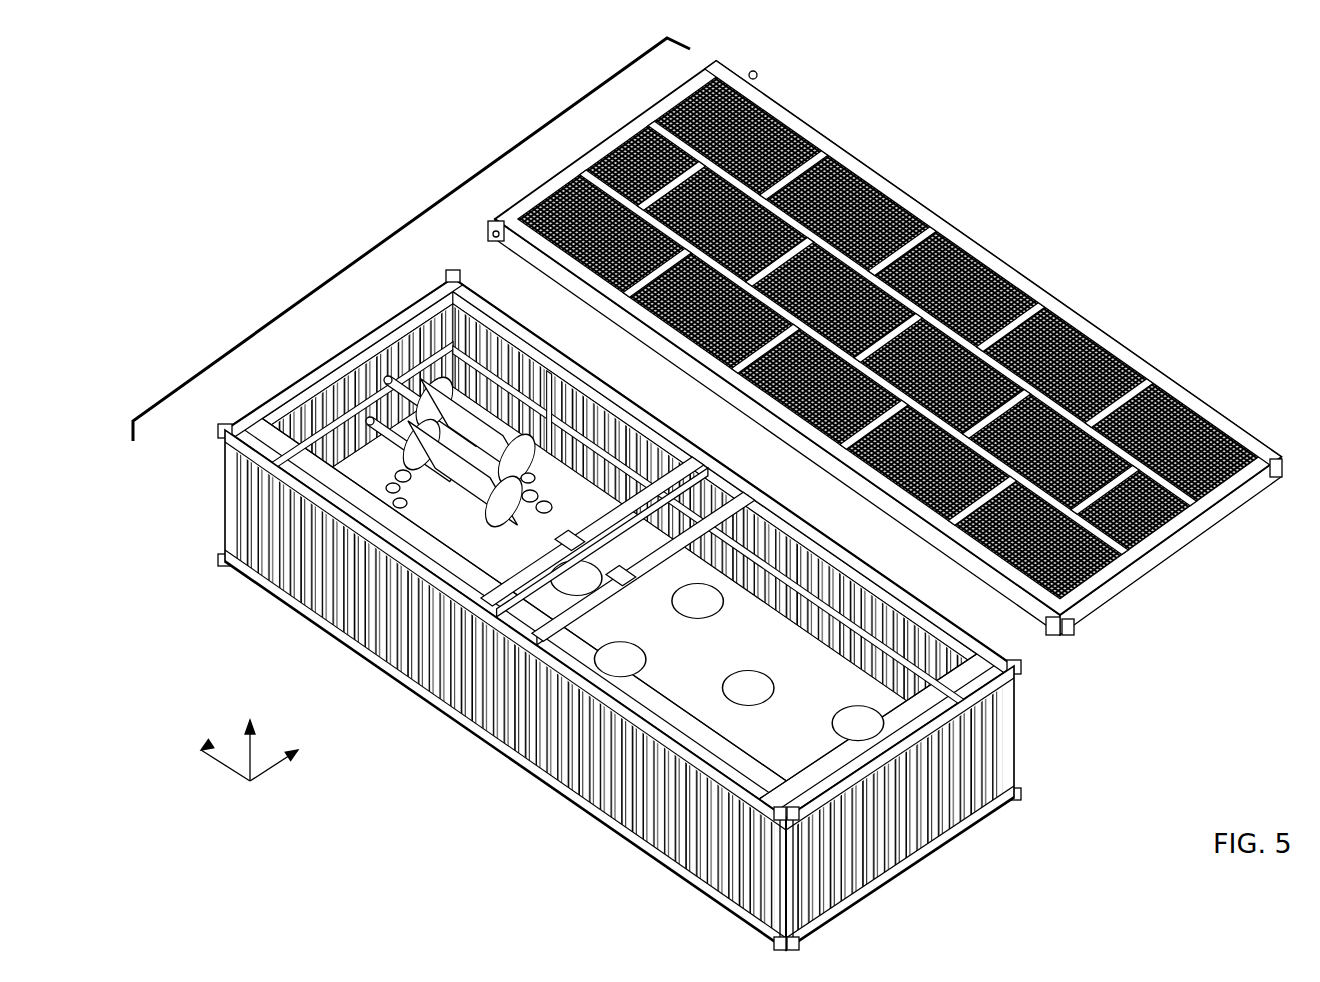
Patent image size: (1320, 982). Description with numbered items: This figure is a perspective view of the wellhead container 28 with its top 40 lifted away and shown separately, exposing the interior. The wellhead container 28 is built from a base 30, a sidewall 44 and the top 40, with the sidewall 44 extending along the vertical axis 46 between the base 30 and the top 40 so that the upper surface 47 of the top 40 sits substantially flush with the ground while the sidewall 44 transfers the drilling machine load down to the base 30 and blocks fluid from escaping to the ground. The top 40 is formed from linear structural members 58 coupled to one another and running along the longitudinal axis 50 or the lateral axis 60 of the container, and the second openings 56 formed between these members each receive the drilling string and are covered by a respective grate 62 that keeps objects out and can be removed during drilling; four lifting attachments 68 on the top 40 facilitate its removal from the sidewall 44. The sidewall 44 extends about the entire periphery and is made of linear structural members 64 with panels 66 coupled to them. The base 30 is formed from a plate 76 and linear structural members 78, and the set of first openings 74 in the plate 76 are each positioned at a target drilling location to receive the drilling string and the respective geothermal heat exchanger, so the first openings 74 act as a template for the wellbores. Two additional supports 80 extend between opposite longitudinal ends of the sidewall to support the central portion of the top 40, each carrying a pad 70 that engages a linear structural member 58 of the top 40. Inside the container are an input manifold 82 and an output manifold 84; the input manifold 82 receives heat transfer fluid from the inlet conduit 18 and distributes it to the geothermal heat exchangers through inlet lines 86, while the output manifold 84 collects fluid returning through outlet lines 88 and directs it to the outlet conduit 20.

The inlet conduit 18 is at (405, 378).
The outlet conduit 20 is at (372, 413).
The wellhead container 28 is at (915, 151).
The base 30 is at (531, 804).
The top 40 is at (1085, 293).
The sidewall 44 is at (1020, 712).
The vertical axis 46 is at (248, 742).
The upper surface 47 is at (1148, 362).
The longitudinal axis 50 is at (252, 760).
The second opening 56 is at (795, 127).
The linear structural member 58 is at (995, 310).
The lateral axis 60 is at (232, 760).
The grate 62 is at (920, 213).
The linear structural member 64 is at (257, 460).
The panel 66 is at (492, 690).
The lifting attachment 68 is at (750, 68).
The pad 70 is at (688, 440).
The first opening 74 is at (583, 432).
The plate 76 is at (668, 718).
The linear structural member 78 is at (716, 882).
The additional support 80 is at (639, 436).
The input manifold 82 is at (540, 425).
The output manifold 84 is at (410, 578).
The inlet line 86 is at (492, 436).
The outlet line 88 is at (405, 478).